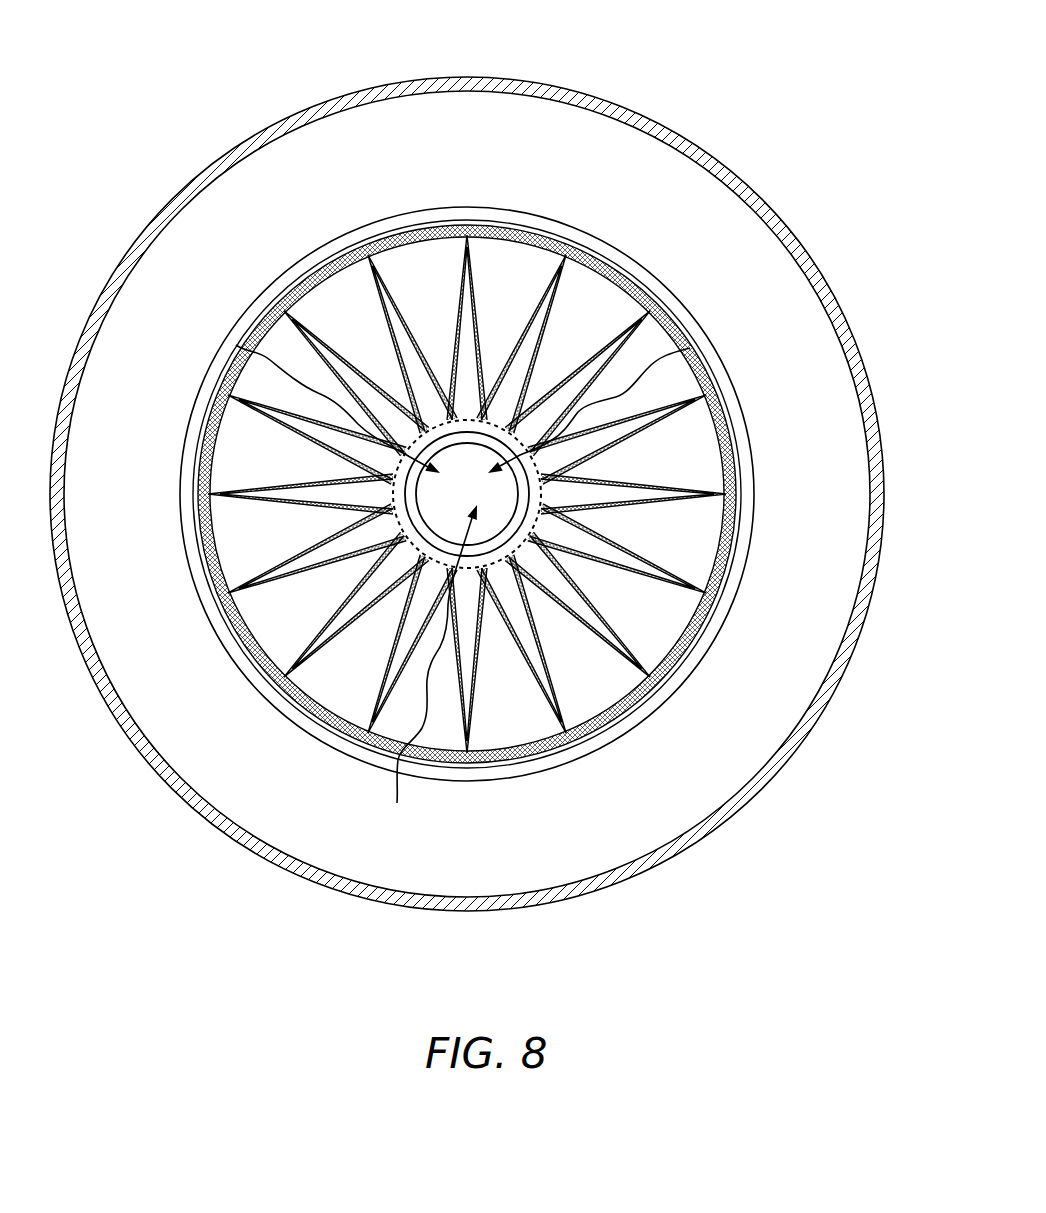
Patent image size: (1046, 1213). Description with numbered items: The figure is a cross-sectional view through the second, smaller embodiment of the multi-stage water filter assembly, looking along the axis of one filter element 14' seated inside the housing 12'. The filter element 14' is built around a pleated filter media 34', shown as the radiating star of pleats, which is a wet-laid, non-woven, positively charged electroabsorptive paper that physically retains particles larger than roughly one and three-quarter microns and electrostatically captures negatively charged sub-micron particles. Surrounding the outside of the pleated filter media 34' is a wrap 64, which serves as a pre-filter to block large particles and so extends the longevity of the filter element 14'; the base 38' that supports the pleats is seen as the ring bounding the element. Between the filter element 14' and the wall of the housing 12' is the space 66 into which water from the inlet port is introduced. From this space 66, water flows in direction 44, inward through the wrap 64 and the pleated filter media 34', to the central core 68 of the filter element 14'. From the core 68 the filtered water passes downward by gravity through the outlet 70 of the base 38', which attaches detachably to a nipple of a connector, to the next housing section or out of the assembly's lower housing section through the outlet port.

The housing 12' is at (467, 473).
The filter element 14' is at (467, 386).
The pleated filter media 34' is at (293, 699).
The base 38' is at (547, 467).
The direction 44 is at (236, 345).
The wrap 64 is at (728, 418).
The space 66 is at (468, 484).
The core 68 is at (467, 494).
The outlet 70 is at (417, 502).